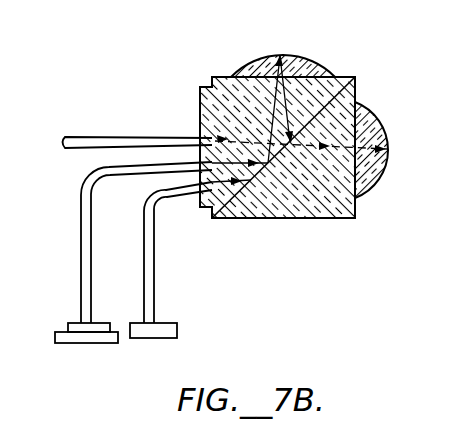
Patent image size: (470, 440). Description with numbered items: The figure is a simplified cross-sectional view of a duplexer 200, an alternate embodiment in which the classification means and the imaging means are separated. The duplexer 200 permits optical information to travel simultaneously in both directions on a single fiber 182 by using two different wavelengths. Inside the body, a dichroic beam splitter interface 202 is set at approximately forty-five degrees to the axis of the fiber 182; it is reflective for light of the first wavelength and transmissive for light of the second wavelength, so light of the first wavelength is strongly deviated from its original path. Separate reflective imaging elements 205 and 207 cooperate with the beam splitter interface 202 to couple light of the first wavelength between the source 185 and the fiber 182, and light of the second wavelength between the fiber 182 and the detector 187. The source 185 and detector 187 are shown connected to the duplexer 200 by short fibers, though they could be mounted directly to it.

The duplexer 200 is at (362, 70).
The dichroic beam splitter interface 202 is at (227, 203).
The reflective imaging element 205 is at (292, 58).
The reflective imaging element 207 is at (376, 186).
The fiber 182 is at (130, 138).
The source 185 is at (82, 345).
The detector 187 is at (163, 342).